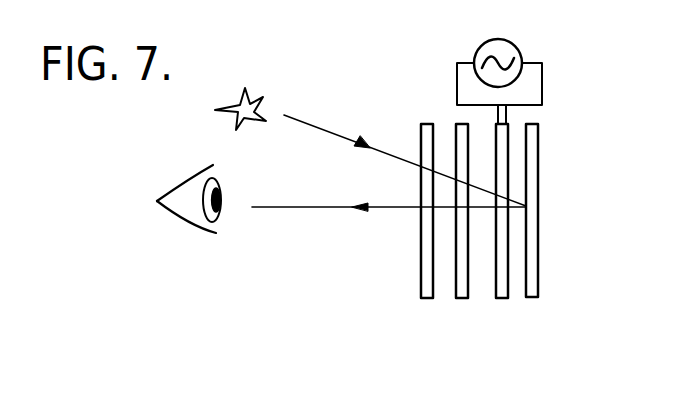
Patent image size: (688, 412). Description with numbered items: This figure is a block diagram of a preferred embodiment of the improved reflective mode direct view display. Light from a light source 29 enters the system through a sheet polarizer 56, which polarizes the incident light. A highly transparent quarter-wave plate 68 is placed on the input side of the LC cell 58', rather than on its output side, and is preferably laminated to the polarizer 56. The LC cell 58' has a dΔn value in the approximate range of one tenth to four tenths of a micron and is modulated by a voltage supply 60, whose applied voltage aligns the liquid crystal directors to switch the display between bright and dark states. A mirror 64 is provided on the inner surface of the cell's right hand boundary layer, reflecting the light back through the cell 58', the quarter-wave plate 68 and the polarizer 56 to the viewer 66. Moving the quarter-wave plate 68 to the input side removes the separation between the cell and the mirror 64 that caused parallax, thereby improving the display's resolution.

The light source 29 is at (243, 87).
The viewer 66 is at (185, 210).
The voltage supply 60 is at (480, 43).
The polarizer 56 is at (424, 299).
The quarter-wave plate 68 is at (460, 299).
The LC cell 58' is at (519, 241).
The mirror 64 is at (539, 225).